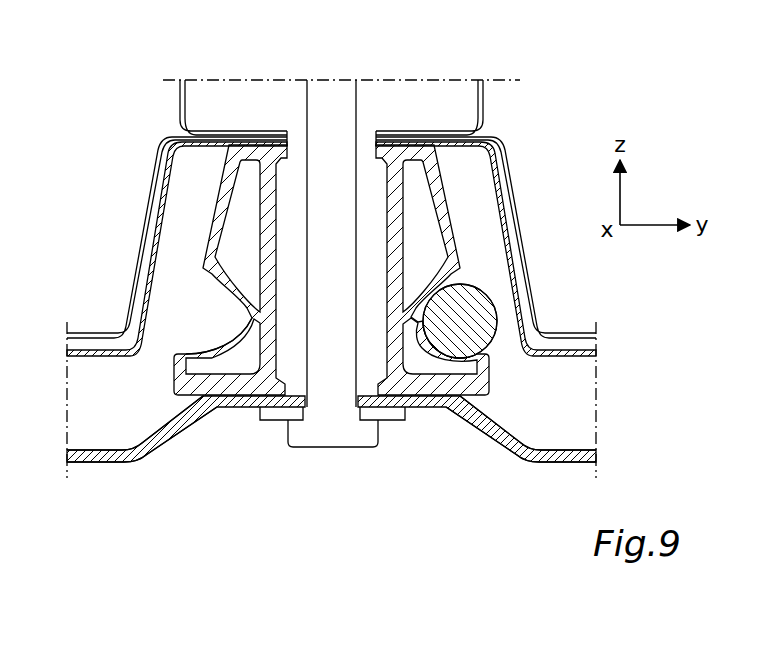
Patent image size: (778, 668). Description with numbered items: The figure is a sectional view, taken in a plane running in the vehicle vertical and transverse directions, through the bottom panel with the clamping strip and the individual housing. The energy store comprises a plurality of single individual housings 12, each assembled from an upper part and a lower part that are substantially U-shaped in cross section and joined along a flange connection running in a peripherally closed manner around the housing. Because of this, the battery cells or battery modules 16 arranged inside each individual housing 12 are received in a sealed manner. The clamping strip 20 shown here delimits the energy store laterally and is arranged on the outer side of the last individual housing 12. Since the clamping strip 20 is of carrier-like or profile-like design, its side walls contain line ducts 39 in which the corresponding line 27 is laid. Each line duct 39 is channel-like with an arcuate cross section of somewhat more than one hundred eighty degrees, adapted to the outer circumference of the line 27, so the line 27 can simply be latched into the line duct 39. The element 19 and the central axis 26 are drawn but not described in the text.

The individual housing 12 is at (119, 170).
The battery cells or battery modules 16 is at (115, 253).
The lower support plate 19 is at (498, 430).
The clamping strip 20 is at (398, 303).
The central axis / shaft 26 is at (342, 130).
The line 27 is at (493, 303).
The line duct 39 is at (235, 338).